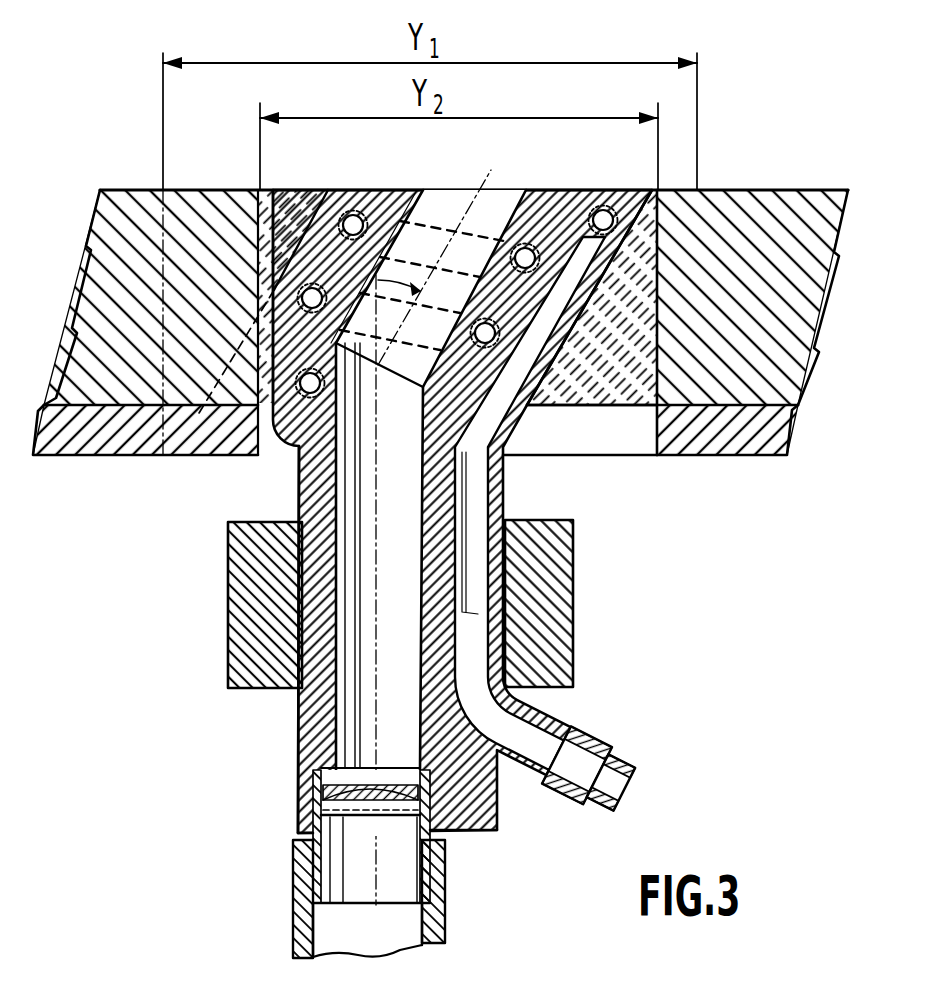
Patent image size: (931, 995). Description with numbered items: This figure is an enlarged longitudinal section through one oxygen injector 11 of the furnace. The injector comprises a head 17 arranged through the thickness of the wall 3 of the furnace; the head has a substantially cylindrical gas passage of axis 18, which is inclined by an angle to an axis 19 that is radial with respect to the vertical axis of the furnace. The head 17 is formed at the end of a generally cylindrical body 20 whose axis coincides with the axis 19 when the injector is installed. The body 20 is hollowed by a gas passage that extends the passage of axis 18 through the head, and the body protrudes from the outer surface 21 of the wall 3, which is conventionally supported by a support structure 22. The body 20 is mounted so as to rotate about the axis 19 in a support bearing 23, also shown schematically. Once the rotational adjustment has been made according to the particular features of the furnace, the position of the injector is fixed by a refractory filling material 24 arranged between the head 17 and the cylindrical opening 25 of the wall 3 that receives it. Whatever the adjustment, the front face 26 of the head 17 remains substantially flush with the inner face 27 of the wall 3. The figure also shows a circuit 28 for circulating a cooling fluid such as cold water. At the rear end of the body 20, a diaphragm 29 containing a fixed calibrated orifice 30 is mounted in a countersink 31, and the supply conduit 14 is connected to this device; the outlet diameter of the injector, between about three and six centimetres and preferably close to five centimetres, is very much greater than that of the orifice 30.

The wall 3 is at (770, 233).
The injector 11 is at (292, 754).
The supply conduit 14 is at (443, 922).
The head 17 is at (327, 280).
The axis 18 is at (452, 207).
The axis 19 is at (298, 492).
The body 20 is at (317, 733).
The outer surface 21 is at (733, 403).
The support structure 22 is at (750, 432).
The support bearing 23 is at (533, 657).
The refractory filling material 24 is at (620, 360).
The cylindrical opening 25 is at (660, 310).
The front face 26 is at (566, 205).
The inner face 27 is at (720, 190).
The circuit 28 is at (512, 408).
The diaphragm 29 is at (307, 870).
The fixed calibrated orifice 30 is at (377, 780).
The countersink 31 is at (320, 795).